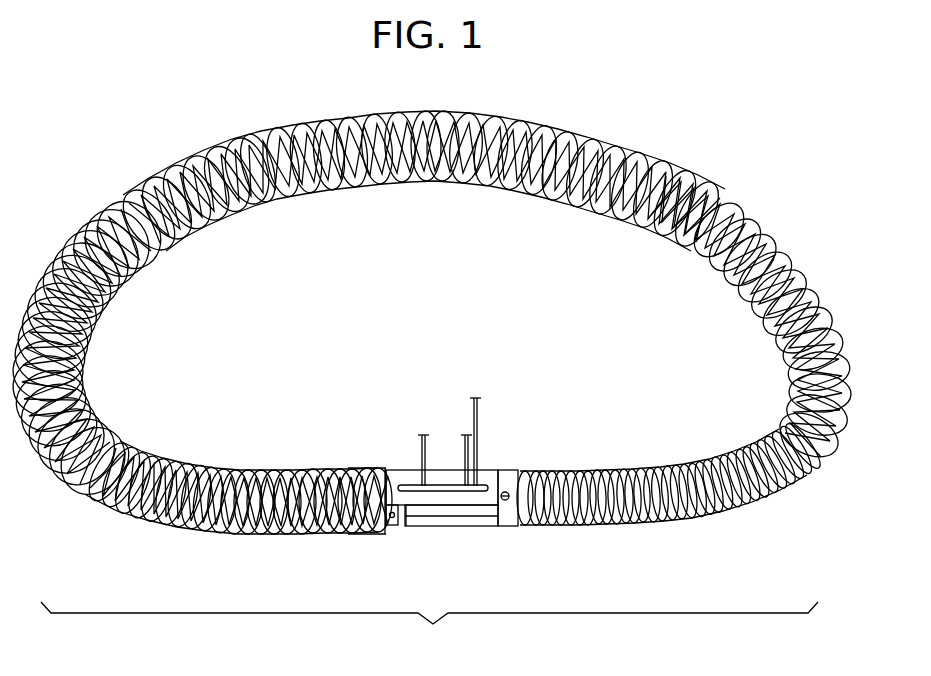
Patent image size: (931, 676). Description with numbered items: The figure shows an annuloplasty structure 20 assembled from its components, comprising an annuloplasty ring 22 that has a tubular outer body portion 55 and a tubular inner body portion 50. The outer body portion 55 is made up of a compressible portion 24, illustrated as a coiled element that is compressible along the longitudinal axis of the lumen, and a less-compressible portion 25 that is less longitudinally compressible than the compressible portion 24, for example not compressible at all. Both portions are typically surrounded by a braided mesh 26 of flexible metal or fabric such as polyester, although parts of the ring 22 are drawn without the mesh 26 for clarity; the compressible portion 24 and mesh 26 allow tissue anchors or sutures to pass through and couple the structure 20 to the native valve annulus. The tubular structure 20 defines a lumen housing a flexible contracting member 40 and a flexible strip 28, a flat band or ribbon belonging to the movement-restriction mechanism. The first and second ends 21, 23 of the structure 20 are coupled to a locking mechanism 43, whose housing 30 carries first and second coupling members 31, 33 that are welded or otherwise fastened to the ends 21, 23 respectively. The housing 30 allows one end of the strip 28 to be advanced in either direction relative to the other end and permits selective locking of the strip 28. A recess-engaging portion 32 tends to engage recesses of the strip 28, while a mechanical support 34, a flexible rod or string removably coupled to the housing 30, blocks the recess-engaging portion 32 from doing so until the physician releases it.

The annuloplasty structure 20 is at (178, 97).
The first end 21 is at (520, 535).
The annuloplasty ring 22 is at (765, 225).
The second end 23 is at (343, 540).
The compressible portion 24 is at (62, 240).
The less-compressible portion 25 is at (429, 627).
The braided mesh 26 is at (302, 112).
The flexible strip 28 is at (720, 205).
The housing 30 is at (462, 512).
The first coupling member 31 is at (507, 464).
The recess-engaging portion 32 is at (400, 518).
The second coupling member 33 is at (357, 462).
The mechanical support 34 is at (463, 393).
The flexible contracting member 40 is at (458, 427).
The locking mechanism 43 is at (402, 375).
The tubular inner body portion 50 is at (130, 178).
The tubular outer body portion 55 is at (808, 478).